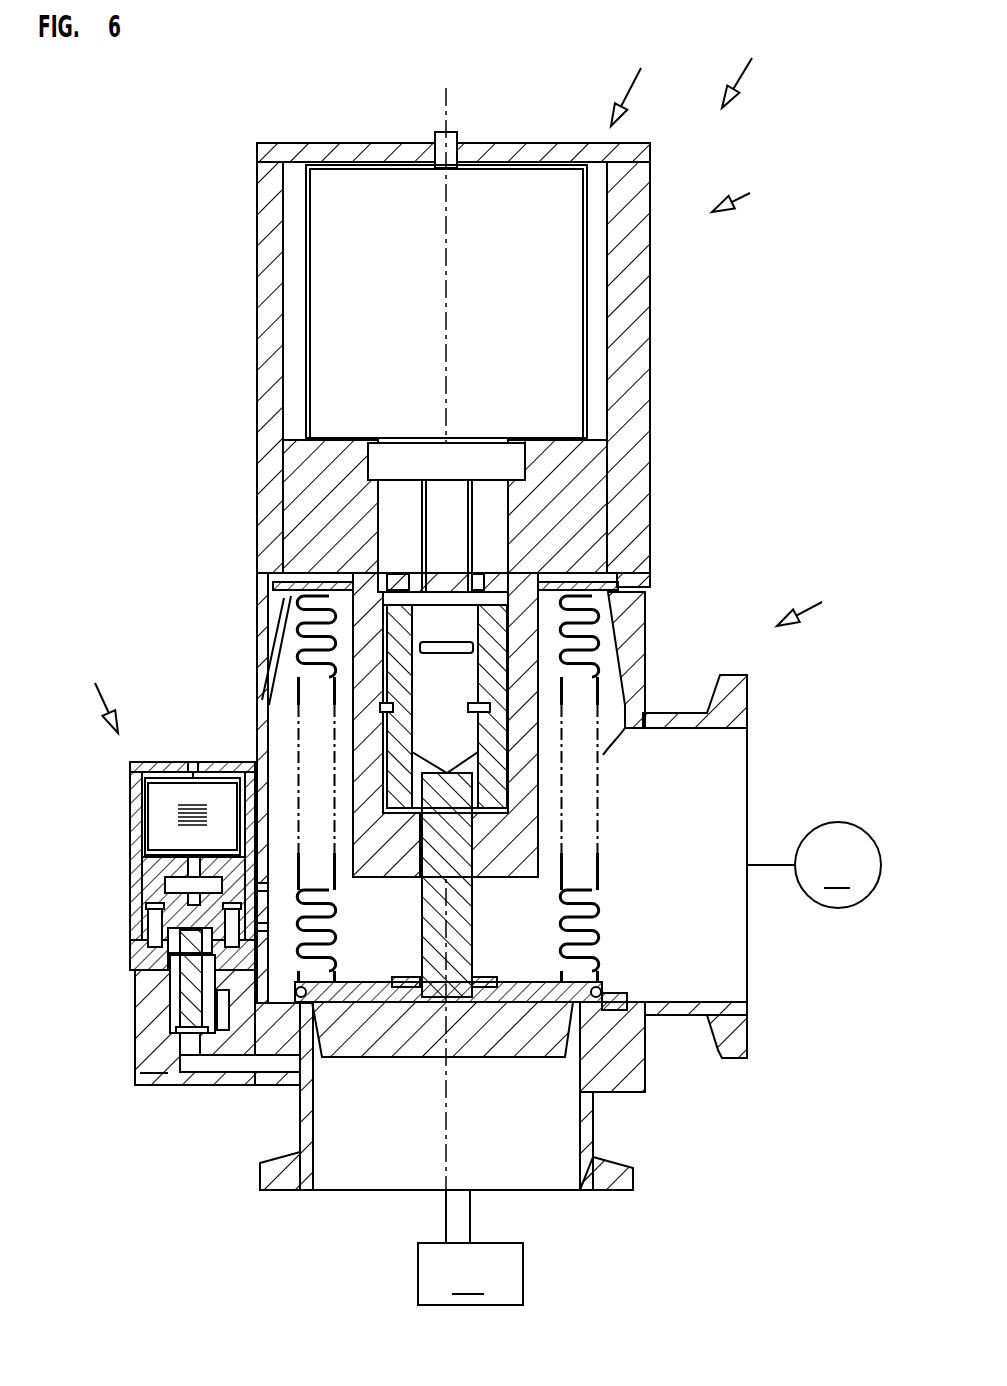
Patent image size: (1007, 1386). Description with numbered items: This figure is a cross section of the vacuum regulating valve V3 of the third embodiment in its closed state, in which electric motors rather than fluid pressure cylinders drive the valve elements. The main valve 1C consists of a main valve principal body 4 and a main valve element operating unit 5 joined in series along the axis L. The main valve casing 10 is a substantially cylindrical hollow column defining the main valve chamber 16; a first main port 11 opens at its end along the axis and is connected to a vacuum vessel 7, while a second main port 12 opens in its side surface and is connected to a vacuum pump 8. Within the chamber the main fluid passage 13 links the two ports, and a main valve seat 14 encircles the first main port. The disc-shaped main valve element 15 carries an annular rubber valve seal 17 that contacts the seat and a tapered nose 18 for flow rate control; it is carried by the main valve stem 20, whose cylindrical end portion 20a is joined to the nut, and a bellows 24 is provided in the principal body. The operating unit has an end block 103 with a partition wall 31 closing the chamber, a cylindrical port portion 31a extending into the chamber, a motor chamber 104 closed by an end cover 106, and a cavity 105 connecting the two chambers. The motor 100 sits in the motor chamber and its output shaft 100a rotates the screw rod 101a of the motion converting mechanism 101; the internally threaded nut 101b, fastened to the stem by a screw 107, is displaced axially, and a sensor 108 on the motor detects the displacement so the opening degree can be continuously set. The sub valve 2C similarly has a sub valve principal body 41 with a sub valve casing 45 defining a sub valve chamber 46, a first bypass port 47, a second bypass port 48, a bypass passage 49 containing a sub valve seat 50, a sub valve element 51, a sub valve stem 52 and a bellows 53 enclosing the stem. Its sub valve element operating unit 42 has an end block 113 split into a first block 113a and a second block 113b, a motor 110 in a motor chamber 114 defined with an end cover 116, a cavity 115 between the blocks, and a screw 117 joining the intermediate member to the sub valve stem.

The main valve 1C is at (631, 79).
The vacuum regulating valve V3 is at (747, 64).
The sub valve 2C is at (95, 687).
The main valve principal body 4 is at (808, 601).
The main valve element operating unit 5 is at (740, 190).
The vacuum vessel 7 is at (470, 1247).
The vacuum pump 8 is at (814, 865).
The main valve casing 10 is at (265, 720).
The first main port 11 is at (373, 1172).
The second main port 12 is at (728, 751).
The main fluid passage 13 is at (602, 990).
The main valve seat 14 is at (600, 1005).
The main valve element 15 is at (492, 1012).
The main valve chamber 16 is at (285, 710).
The valve seal 17 is at (600, 1000).
The nose 18 is at (407, 1027).
The main valve stem 20 is at (454, 916).
The end portion 20a is at (600, 660).
The bellows 24 is at (600, 905).
The partition wall 31 is at (305, 478).
The cylindrical port portion 31a is at (297, 633).
The sub valve principal body 41 is at (86, 1113).
The sub valve element operating unit 42 is at (81, 762).
The sub valve casing 45 is at (150, 1076).
The sub valve chamber 46 is at (165, 990).
The first bypass port 47 is at (247, 1075).
The second bypass port 48 is at (223, 1015).
The bypass passage 49 is at (207, 1063).
The sub valve seat 50 is at (185, 1031).
The sub valve element 51 is at (172, 1080).
The sub valve stem 52 is at (177, 1028).
The bellows 53 is at (178, 1008).
The electric motor 100 is at (504, 197).
The output shaft 100a is at (436, 136).
The motion converting mechanism 101 is at (745, 455).
The rotating screw rod 101a is at (456, 497).
The internally threaded nut 101b is at (497, 593).
The end block 103 is at (270, 235).
The motor chamber 104 is at (300, 200).
The cavity 105 is at (395, 527).
The end cover 106 is at (277, 143).
The screw 107 is at (398, 574).
The sensor 108 is at (490, 457).
The electric motor 110 is at (160, 838).
The end block 113 is at (60, 872).
The first block 113a is at (140, 925).
The second block 113b is at (140, 887).
The motor chamber 114 is at (152, 790).
The cavity 115 is at (258, 887).
The end cover 116 is at (147, 793).
The screw 117 is at (258, 927).
The axis L is at (445, 647).